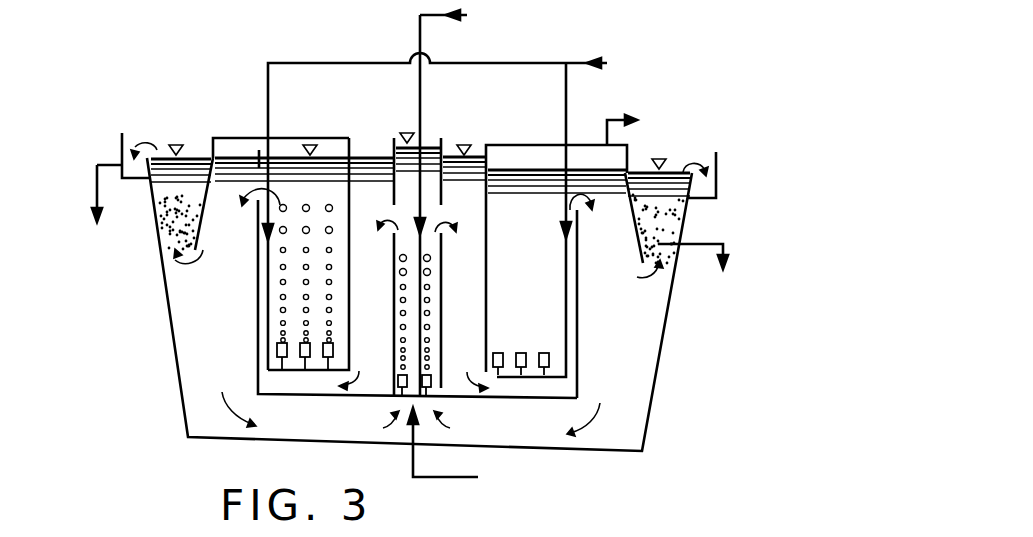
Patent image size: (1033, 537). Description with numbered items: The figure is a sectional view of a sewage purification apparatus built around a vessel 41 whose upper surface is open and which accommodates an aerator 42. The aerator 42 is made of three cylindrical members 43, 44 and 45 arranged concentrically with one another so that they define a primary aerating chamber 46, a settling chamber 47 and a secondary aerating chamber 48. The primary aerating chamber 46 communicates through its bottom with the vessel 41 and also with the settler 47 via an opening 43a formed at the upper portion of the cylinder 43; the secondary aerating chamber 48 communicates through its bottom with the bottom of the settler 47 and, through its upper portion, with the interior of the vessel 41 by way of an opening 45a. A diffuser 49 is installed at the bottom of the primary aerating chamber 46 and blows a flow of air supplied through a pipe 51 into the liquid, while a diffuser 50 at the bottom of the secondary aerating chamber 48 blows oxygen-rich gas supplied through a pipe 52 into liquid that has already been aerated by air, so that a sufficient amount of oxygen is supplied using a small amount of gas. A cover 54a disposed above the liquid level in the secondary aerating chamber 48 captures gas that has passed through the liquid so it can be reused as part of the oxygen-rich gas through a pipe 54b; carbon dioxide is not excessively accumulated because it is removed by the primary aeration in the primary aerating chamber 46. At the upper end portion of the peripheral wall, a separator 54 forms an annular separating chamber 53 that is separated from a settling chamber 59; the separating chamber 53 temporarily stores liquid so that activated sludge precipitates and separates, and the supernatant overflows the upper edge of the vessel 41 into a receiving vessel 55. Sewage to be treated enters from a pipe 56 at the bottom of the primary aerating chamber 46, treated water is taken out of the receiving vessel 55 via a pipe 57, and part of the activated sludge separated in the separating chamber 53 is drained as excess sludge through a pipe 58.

The vessel 41 is at (175, 380).
The aerator 42 is at (315, 401).
The cylindrical member 43 is at (441, 276).
The opening 43a is at (441, 210).
The cylindrical member 44 is at (487, 144).
The cylindrical member 45 is at (577, 322).
The opening 45a is at (585, 214).
The primary aerating chamber 46 is at (399, 267).
The settling chamber 47 is at (380, 318).
The secondary aerating chamber 48 is at (337, 221).
The diffuser 49 is at (430, 380).
The diffuser 50 is at (335, 357).
The pipe 51 is at (421, 36).
The pipe 52 is at (344, 62).
The separating chamber 53 is at (165, 192).
The separator 54 is at (213, 137).
The cover 54a is at (318, 119).
The pipe 54b is at (616, 120).
The receiving vessel 55 is at (716, 177).
The pipe 56 is at (437, 478).
The pipe 57 is at (95, 178).
The pipe 58 is at (723, 247).
The settling chamber 59 is at (241, 248).